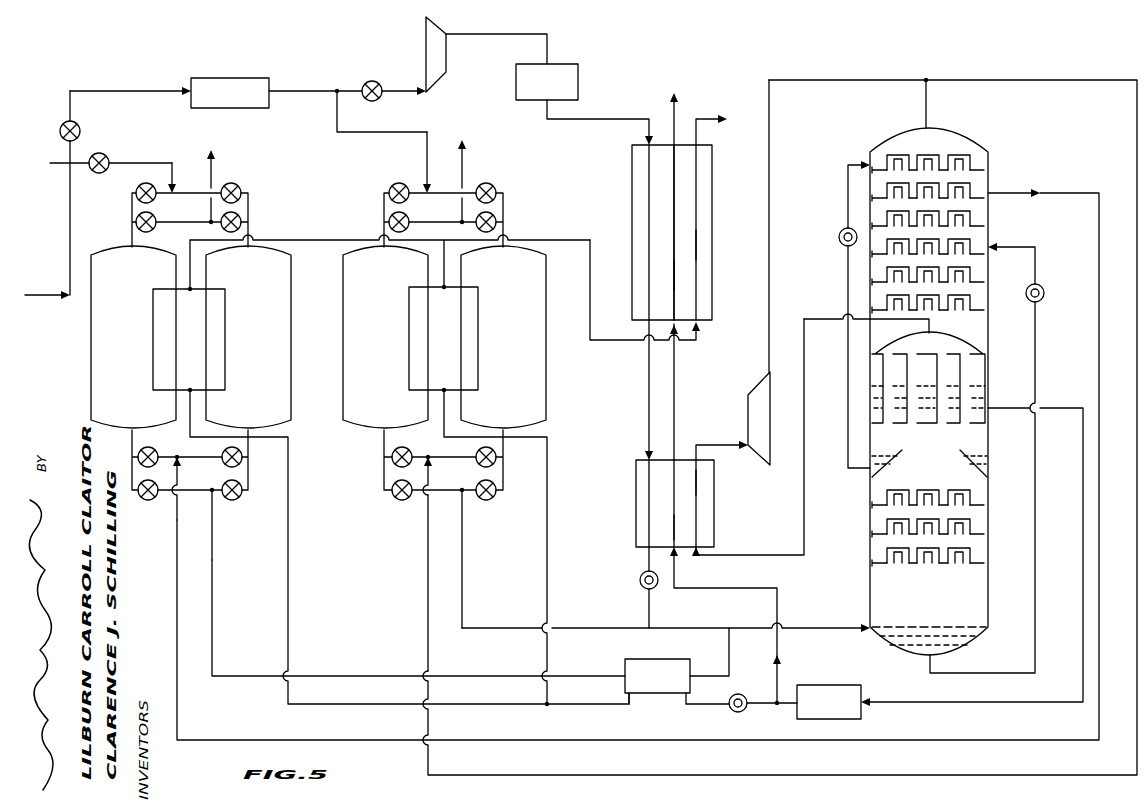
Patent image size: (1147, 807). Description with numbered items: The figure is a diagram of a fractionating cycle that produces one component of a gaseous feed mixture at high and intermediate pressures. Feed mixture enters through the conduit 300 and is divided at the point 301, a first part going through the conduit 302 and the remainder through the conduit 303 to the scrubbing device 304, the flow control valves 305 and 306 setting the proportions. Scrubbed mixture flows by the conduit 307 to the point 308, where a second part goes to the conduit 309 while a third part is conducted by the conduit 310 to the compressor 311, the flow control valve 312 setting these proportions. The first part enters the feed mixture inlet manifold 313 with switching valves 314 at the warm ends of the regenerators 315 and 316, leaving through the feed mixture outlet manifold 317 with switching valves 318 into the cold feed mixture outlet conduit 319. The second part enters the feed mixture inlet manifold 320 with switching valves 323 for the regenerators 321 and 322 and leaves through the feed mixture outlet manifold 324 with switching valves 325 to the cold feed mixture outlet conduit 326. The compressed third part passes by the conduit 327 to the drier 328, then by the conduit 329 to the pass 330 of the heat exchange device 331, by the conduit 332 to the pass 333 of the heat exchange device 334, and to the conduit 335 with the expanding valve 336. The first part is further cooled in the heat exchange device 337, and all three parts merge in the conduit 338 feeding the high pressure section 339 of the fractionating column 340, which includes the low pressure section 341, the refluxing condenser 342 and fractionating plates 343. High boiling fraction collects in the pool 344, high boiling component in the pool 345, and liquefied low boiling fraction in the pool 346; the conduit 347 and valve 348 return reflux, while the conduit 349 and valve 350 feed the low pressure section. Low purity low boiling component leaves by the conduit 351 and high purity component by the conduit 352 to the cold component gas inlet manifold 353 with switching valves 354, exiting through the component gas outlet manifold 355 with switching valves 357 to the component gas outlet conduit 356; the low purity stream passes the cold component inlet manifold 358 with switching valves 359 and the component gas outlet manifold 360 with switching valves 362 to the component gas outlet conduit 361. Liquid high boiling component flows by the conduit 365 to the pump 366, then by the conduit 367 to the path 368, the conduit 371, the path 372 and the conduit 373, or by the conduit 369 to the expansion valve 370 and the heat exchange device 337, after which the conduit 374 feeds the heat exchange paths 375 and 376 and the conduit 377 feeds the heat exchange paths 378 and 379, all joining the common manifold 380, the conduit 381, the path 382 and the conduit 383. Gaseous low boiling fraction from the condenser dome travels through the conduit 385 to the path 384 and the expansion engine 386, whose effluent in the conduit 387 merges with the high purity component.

The conduit 300 is at (35, 291).
The point 301 is at (58, 163).
The conduit 302 is at (155, 162).
The conduit 303 is at (124, 90).
The scrubbing device 304 is at (232, 78).
The flow control valve 305 is at (100, 153).
The flow control valve 306 is at (60, 131).
The conduit 307 is at (315, 80).
The point 308 is at (338, 88).
The conduit 309 is at (334, 117).
The conduit 310 is at (400, 89).
The compressor 311 is at (425, 42).
The flow control valve 312 is at (375, 100).
The feed mixture inlet manifold 313 is at (187, 191).
The switching valve 314 is at (136, 188).
The regenerator 315 is at (90, 339).
The regenerator 316 is at (293, 333).
The feed mixture outlet manifold 317 is at (192, 497).
The switching valve 318 is at (195, 501).
The cold feed mixture outlet conduit 319 is at (213, 603).
The feed mixture inlet manifold 320 is at (443, 188).
The regenerator 321 is at (344, 388).
The regenerator 322 is at (549, 388).
The switching valve 323 is at (390, 187).
The feed mixture outlet manifold 324 is at (445, 498).
The switching valve 325 is at (445, 501).
The cold feed mixture outlet conduit 326 is at (462, 590).
The conduit 327 is at (486, 36).
The drier 328 is at (515, 84).
The conduit 329 is at (607, 117).
The pass 330 is at (631, 198).
The heat exchange device 331 is at (716, 187).
The conduit 332 is at (648, 399).
The pass 333 is at (635, 483).
The heat exchange device 334 is at (630, 514).
The conduit 335 is at (647, 609).
The valve 336 is at (640, 580).
The heat exchange device 337 is at (655, 658).
The conduit 338 is at (828, 626).
The high pressure section 339 is at (870, 560).
The fractionating column 340 is at (988, 135).
The low pressure section 341 is at (990, 236).
The refluxing condenser 342 is at (940, 338).
The fractionating plates 343 is at (981, 308).
The pool 344 is at (962, 628).
The pool 345 is at (978, 404).
The pool 346 is at (985, 467).
The conduit 347 is at (848, 362).
The valve 348 is at (839, 234).
The conduit 349 is at (1035, 512).
The valve 350 is at (1045, 292).
The conduit 351 is at (1066, 196).
The conduit 352 is at (983, 80).
The cold component gas inlet manifold 353 is at (468, 458).
The switching valve 354 is at (392, 455).
The component gas outlet manifold 355 is at (448, 221).
The component gas outlet conduit 356 is at (468, 161).
The switching valve 357 is at (388, 222).
The cold component inlet manifold 358 is at (212, 456).
The switching valve 359 is at (138, 451).
The component gas outlet manifold 360 is at (189, 224).
The component gas outlet conduit 361 is at (212, 163).
The switching valve 362 is at (243, 221).
The conduit 365 is at (1083, 441).
The pump 366 is at (827, 684).
The conduit 367 is at (777, 673).
The path 368 is at (676, 528).
The conduit 369 is at (761, 706).
The expansion valve 370 is at (735, 712).
The conduit 371 is at (678, 412).
The path 372 is at (698, 272).
The conduit 373 is at (676, 113).
The conduit 374 is at (546, 541).
The heat exchange path 375 is at (408, 326).
The heat exchange path 376 is at (479, 331).
The conduit 377 is at (288, 520).
The heat exchange path 378 is at (152, 326).
The heat exchange path 379 is at (227, 326).
The common manifold 380 is at (389, 254).
The conduit 381 is at (591, 308).
The path 382 is at (698, 244).
The conduit 383 is at (717, 123).
The path 384 is at (699, 481).
The conduit 385 is at (719, 444).
The expansion engine 386 is at (760, 392).
The conduit 387 is at (770, 174).